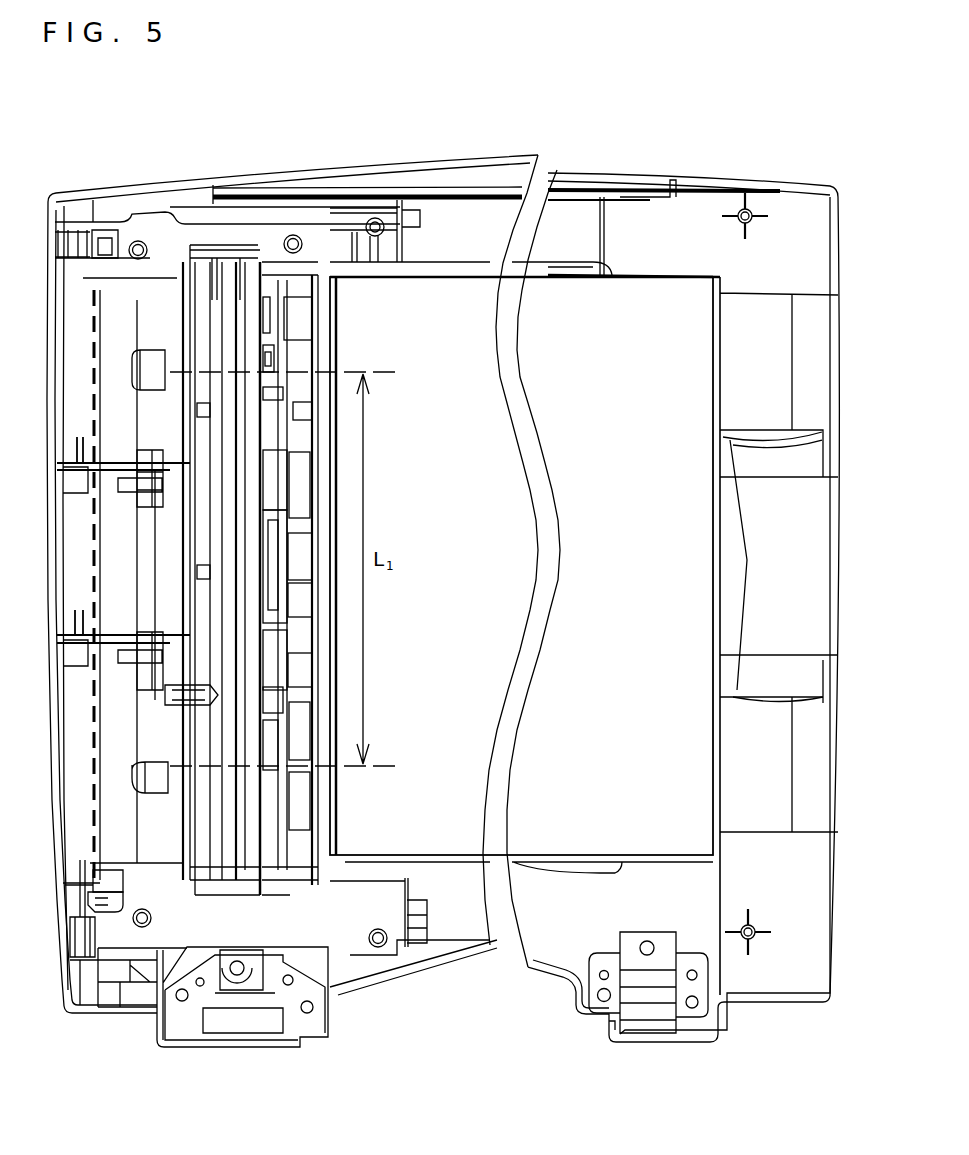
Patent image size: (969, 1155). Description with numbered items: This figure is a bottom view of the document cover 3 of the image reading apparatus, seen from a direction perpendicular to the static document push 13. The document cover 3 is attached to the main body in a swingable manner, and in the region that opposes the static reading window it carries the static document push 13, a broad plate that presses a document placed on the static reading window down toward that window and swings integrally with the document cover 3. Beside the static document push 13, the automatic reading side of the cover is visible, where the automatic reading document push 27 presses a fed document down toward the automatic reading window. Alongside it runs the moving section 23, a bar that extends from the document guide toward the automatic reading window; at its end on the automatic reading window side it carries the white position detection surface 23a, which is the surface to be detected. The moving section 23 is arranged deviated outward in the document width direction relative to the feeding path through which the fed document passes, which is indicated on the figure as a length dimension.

The document cover 3 is at (732, 178).
The static document push 13 is at (633, 307).
The moving section 23 is at (283, 308).
The position detection surface 23a is at (270, 345).
The automatic reading document push 27 is at (243, 293).